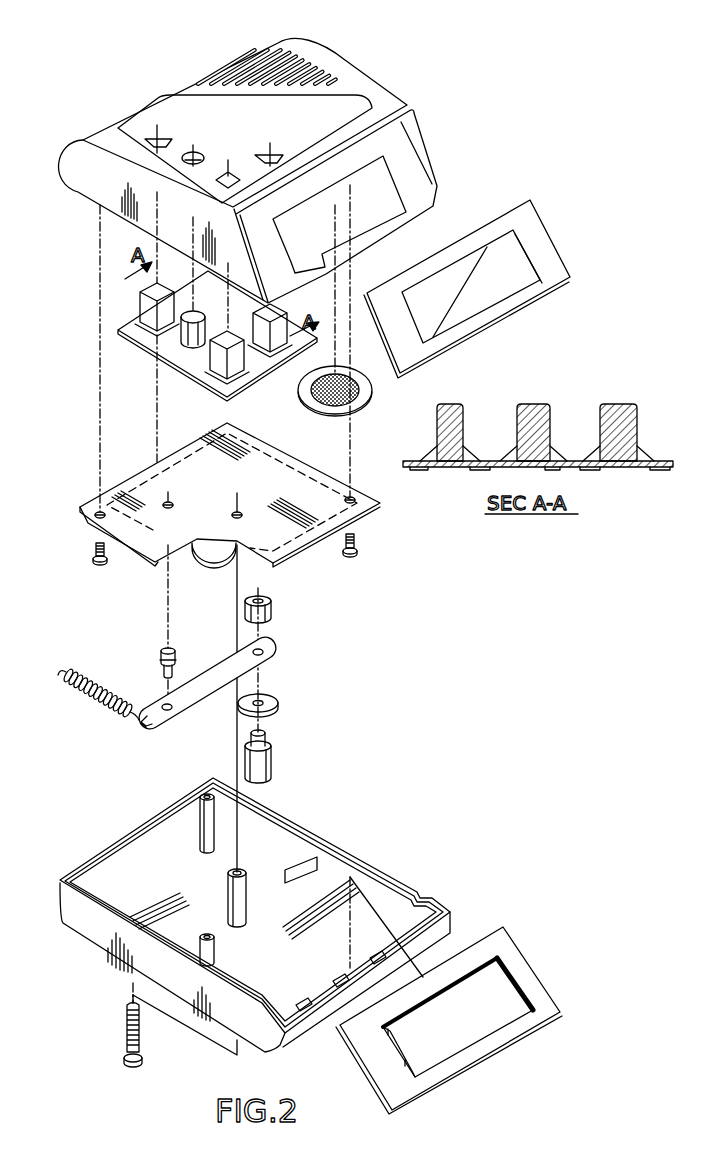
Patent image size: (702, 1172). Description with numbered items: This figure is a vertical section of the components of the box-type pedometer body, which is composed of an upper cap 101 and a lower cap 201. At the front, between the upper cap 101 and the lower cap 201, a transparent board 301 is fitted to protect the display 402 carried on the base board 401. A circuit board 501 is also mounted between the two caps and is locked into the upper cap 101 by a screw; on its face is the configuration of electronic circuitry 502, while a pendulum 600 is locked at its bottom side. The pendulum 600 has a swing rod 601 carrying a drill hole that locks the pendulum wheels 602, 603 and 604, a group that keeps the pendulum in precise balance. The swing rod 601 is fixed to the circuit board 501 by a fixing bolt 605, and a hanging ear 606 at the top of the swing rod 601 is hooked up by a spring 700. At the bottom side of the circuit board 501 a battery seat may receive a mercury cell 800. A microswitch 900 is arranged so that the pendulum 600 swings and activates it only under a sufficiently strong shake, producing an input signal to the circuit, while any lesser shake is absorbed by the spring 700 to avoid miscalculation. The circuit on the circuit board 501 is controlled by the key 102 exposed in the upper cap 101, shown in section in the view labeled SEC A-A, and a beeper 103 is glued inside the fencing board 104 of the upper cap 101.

The upper cap 101 is at (365, 89).
The key 102 is at (131, 300).
The beeper 103 is at (362, 404).
The fencing board 104 is at (222, 74).
The lower cap 201 is at (133, 847).
The transparent board 301 is at (547, 243).
The base board 401 is at (512, 943).
The display 402 is at (515, 993).
The circuit board 501 is at (93, 507).
The electronic circuitry 502 is at (183, 467).
The pendulum 600 is at (230, 689).
The swing rod 601 is at (205, 691).
The pendulum wheel 602 is at (273, 762).
The pendulum wheel 603 is at (278, 704).
The pendulum wheel 604 is at (273, 613).
The fixing bolt 605 is at (165, 647).
The hanging ear 606 is at (145, 710).
The spring 700 is at (90, 677).
The mercury cell 800 is at (217, 553).
The microswitch 900 is at (298, 553).